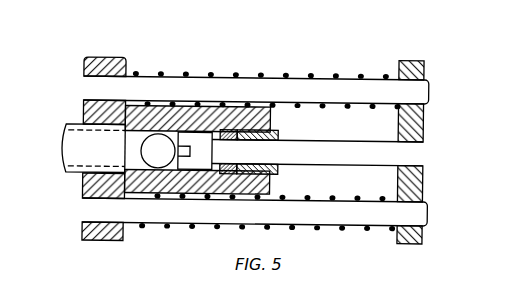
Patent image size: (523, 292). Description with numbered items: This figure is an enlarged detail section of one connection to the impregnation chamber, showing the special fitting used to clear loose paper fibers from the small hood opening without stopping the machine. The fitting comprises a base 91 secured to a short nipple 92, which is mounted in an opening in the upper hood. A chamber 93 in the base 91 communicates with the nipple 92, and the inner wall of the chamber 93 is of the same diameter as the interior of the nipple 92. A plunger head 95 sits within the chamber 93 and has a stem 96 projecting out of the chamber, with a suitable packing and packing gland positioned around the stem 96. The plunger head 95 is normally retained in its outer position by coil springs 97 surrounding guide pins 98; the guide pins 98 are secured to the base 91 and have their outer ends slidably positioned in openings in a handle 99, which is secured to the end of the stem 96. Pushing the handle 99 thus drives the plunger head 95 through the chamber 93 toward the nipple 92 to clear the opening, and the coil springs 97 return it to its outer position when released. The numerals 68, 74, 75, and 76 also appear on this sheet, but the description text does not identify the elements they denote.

The frame member 68 is at (0, 243).
The guide member 74 is at (0, 163).
The support member 75 is at (0, 97).
The mounting plate 76 is at (0, 54).
The base 91 is at (85, 58).
The short nipple 92 is at (75, 142).
The chamber 93 is at (133, 137).
The plunger head 95 is at (202, 159).
The stem 96 is at (398, 147).
The coil springs 97 is at (233, 70).
The guide pins 98 is at (190, 84).
The handle 99 is at (423, 58).